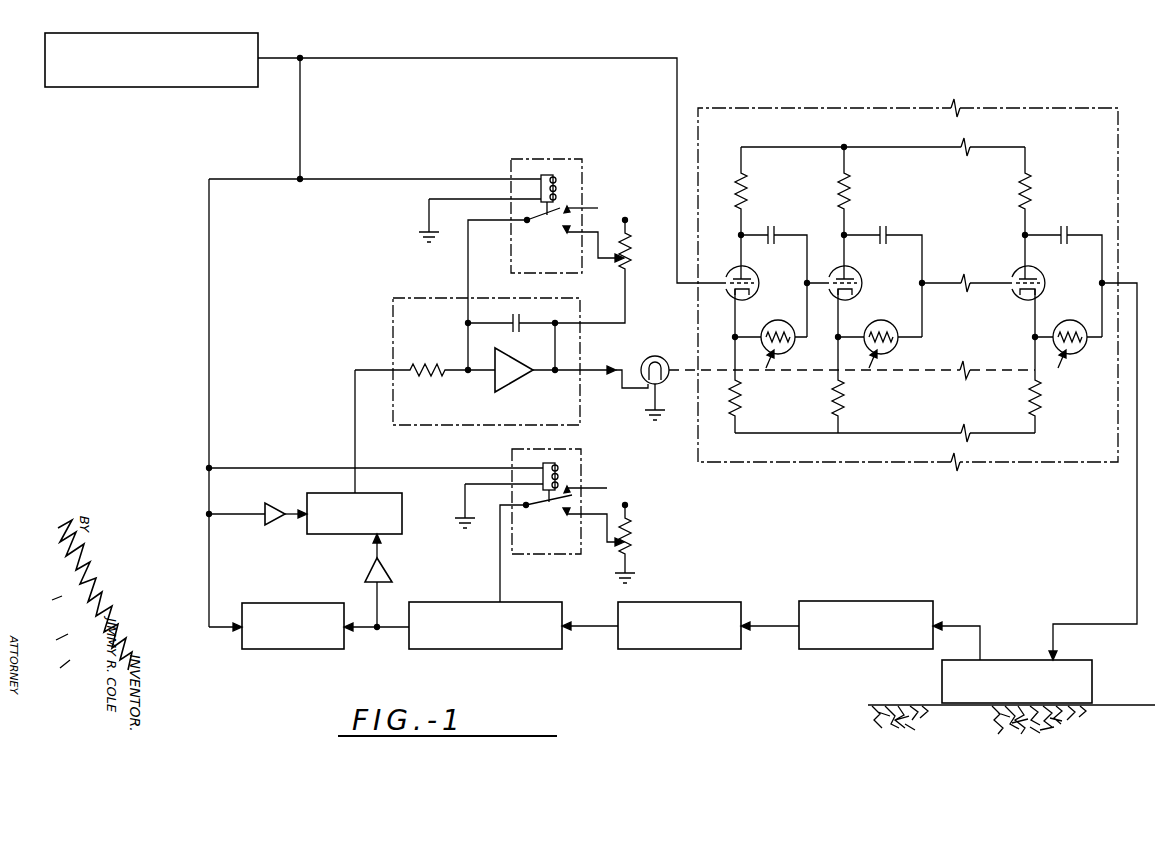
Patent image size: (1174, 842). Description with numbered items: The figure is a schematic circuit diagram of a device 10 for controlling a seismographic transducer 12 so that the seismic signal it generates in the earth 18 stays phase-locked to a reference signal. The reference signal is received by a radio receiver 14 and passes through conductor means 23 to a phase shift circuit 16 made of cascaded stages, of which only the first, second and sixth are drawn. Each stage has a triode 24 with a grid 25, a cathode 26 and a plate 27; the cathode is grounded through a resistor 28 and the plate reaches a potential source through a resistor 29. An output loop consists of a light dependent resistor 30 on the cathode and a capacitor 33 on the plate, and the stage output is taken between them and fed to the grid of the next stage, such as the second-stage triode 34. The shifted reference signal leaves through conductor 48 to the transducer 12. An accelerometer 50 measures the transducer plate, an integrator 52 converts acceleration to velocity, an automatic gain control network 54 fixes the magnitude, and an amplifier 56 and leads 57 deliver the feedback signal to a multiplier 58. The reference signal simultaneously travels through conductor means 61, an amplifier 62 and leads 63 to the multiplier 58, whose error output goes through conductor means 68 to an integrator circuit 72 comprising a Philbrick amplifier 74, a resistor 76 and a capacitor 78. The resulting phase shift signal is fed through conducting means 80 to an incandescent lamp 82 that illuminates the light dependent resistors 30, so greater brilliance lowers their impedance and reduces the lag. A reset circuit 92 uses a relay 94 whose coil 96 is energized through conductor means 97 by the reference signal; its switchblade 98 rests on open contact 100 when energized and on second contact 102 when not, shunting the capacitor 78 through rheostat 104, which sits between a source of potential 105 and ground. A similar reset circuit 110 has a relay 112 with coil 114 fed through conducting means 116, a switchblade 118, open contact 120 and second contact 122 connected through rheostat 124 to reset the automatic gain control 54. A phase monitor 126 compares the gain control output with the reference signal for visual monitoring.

The device 10 is at (160, 334).
The seismographic transducer 12 is at (930, 677).
The radio receiver 14 is at (171, 89).
The phase shift circuit 16 is at (1027, 465).
The earth 18 is at (1122, 704).
The conductor means 23 is at (680, 74).
The triode 24 is at (744, 271).
The grid 25 is at (708, 285).
The cathode 26 is at (750, 296).
The plate 27 is at (752, 280).
The resistor 28 is at (731, 406).
The resistor 29 is at (734, 191).
The light dependent resistor 30 is at (794, 344).
The capacitor 33 is at (772, 231).
The second stage vacuum tube 34 is at (869, 281).
The conductor 48 is at (1136, 515).
The accelerometer 50 is at (872, 601).
The integrator 52 is at (673, 602).
The automatic gain control network 54 is at (443, 652).
The amplifier 56 is at (388, 572).
The leads 57 is at (372, 553).
The multiplier 58 is at (347, 537).
The conductor means 61 is at (207, 379).
The amplifier 62 is at (273, 503).
The leads 63 is at (295, 518).
The conductor means 68 is at (356, 441).
The integrator circuit 72 is at (483, 378).
The Philbrick amplifier 74 is at (518, 384).
The resistor 76 is at (428, 367).
The capacitor 78 is at (523, 321).
The conducting means 80 is at (620, 383).
The incandescent lamp 82 is at (667, 356).
The reset circuit 92 is at (524, 206).
The relay 94 is at (564, 159).
The coil 96 is at (558, 187).
The conductor means 97 is at (416, 178).
The switchblade 98 is at (552, 229).
The open contact 100 is at (600, 207).
The second contact 102 is at (574, 234).
The rheostat 104 is at (636, 263).
The source of potential 105 is at (627, 220).
The reset circuit 110 is at (558, 493).
The relay 112 is at (532, 450).
The coil 114 is at (558, 473).
The conducting means 116 is at (463, 468).
The switchblade 118 is at (551, 512).
The open contact 120 is at (607, 487).
The second contact 122 is at (577, 518).
The rheostat 124 is at (636, 547).
The phase monitor 126 is at (300, 650).